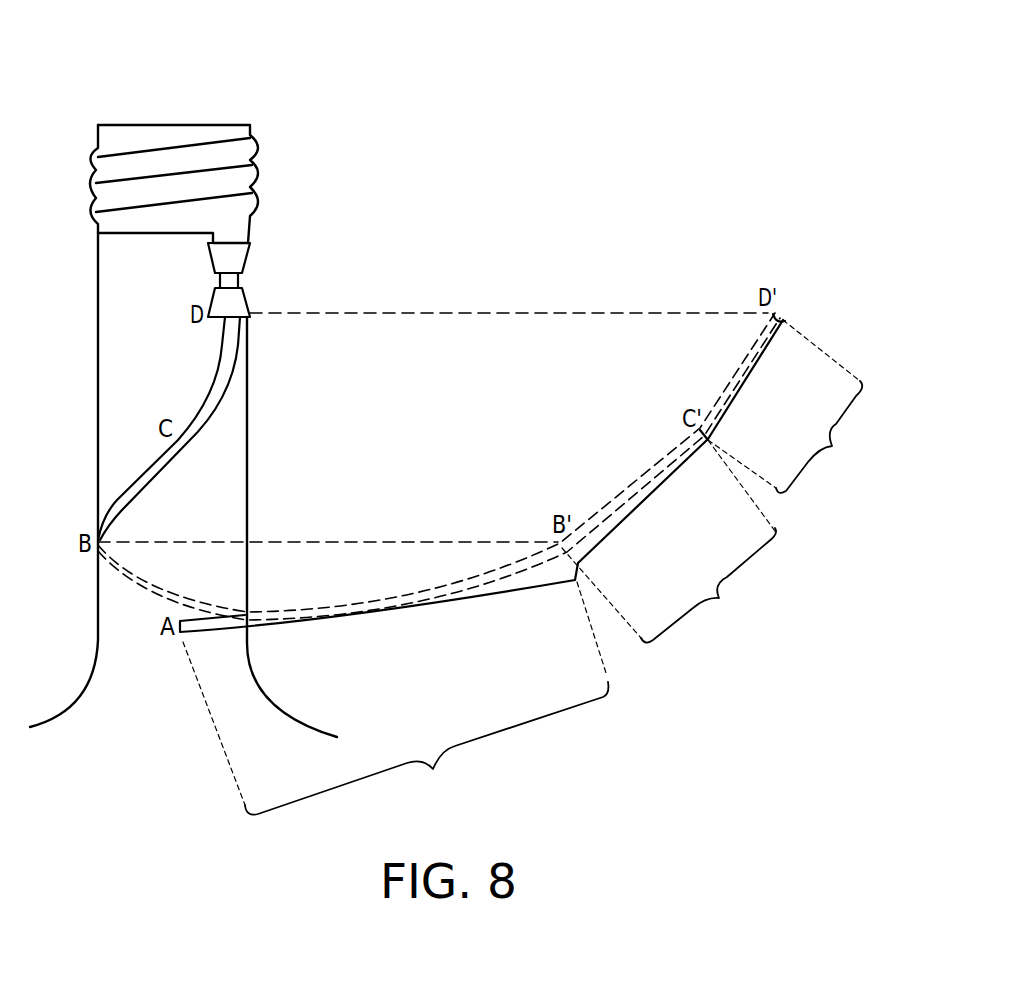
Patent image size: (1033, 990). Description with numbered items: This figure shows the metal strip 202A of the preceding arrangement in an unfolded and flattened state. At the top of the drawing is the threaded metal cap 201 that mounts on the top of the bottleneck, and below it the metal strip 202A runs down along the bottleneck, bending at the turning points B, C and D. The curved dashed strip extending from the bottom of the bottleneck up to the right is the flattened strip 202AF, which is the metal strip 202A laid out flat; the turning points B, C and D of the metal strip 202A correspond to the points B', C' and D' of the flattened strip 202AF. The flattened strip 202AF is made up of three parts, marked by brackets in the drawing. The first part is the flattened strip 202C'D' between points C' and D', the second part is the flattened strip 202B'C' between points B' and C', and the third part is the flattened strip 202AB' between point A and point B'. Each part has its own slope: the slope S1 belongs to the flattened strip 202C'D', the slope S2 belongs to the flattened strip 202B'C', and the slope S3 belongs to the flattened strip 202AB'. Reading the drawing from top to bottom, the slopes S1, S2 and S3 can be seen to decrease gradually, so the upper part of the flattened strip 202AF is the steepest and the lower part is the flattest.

The metal cap 201 is at (235, 182).
The metal strip 202A is at (440, 483).
The flattened strip 202AF is at (785, 309).
The flattened strip 202AB' is at (395, 698).
The flattened strip 202B'C' is at (669, 546).
The flattened strip 202C'D' is at (790, 407).
The slope S1 is at (745, 379).
The slope S2 is at (643, 496).
The slope S3 is at (379, 608).